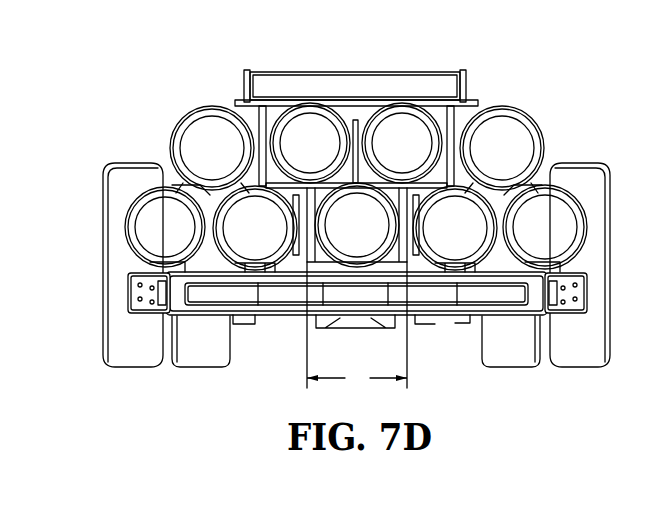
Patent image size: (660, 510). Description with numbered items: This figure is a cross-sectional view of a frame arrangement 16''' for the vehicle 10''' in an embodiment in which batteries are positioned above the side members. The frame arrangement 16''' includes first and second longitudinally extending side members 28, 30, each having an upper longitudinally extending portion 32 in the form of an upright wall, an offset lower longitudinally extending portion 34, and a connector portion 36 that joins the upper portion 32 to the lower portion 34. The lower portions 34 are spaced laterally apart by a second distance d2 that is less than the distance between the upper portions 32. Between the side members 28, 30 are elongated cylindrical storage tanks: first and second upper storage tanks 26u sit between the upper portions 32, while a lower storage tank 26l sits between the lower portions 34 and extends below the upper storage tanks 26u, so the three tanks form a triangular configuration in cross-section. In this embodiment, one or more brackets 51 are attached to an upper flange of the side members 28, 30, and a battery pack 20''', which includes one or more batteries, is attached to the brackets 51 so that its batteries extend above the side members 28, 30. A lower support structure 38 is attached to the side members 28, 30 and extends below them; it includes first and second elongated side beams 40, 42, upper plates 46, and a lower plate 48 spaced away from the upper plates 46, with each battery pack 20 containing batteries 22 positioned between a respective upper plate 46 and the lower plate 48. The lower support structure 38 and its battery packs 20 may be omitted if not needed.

The vehicle 10''' is at (322, 211).
The frame arrangement 16''' is at (367, 208).
The battery pack 20''' is at (356, 65).
The bracket 51 is at (248, 76).
The second side member 30 is at (242, 106).
The first side member 28 is at (478, 106).
The upper storage tank 26u is at (173, 128).
The upper longitudinally extending portion 32 is at (262, 118).
The connector portion 36 is at (287, 160).
The lower longitudinally extending portion 34 is at (295, 225).
The lower storage tank 26l is at (367, 262).
The upper plate 46 is at (507, 268).
The second side beam 42 is at (128, 293).
The first side beam 40 is at (578, 303).
The battery pack 20 is at (356, 316).
The battery 22 is at (490, 318).
The lower plate 48 is at (243, 317).
The lower support structure 38 is at (424, 345).
The second distance d2 is at (357, 328).